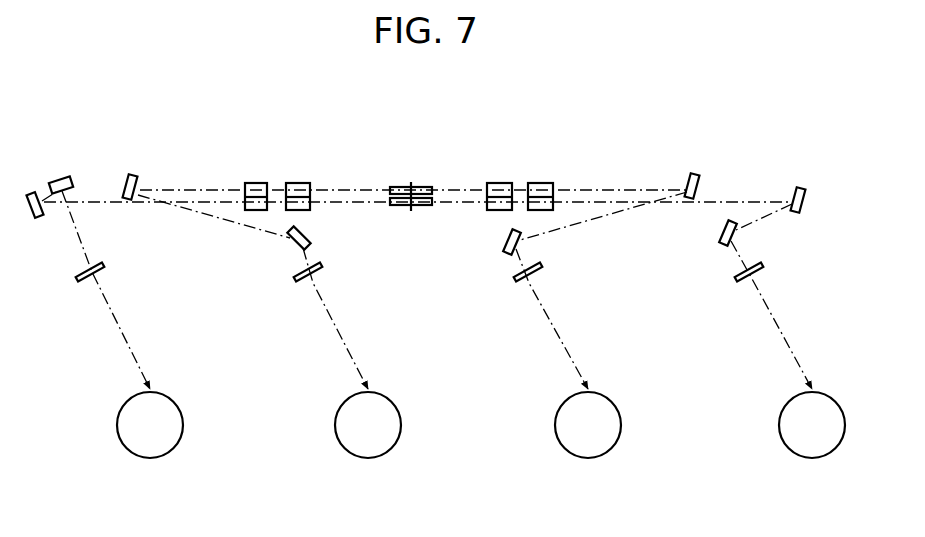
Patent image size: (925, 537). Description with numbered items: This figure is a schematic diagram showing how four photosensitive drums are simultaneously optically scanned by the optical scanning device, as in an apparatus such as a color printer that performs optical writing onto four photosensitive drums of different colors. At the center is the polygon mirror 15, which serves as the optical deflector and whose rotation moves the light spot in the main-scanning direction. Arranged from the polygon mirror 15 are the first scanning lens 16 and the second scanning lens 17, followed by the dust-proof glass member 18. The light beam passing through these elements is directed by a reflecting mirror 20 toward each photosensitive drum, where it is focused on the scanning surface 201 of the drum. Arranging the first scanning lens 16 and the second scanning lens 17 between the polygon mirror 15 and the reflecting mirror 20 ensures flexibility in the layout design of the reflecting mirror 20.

The reflecting mirror 20 is at (131, 175).
The second scanning lens 17 is at (257, 183).
The first scanning lens 16 is at (297, 183).
The polygon mirror 15 is at (391, 181).
The dust-proof glass member 18 is at (77, 278).
The scanning surface 201 is at (117, 427).